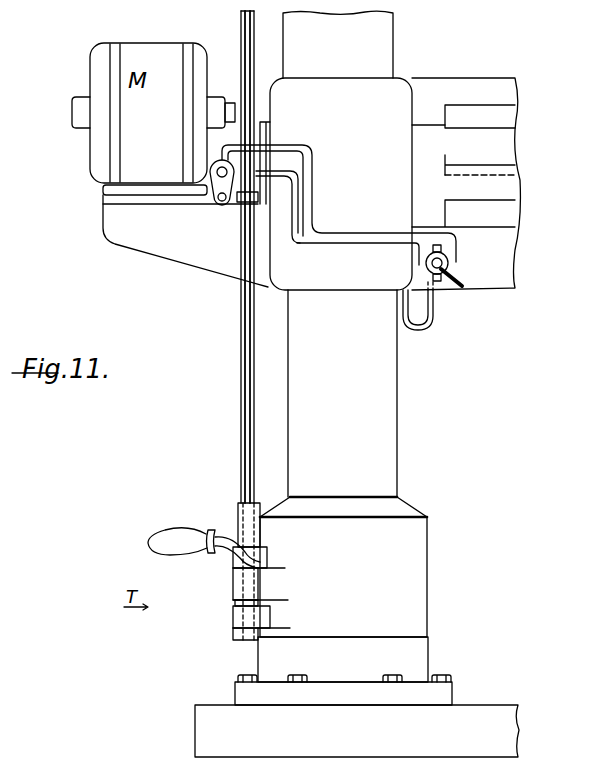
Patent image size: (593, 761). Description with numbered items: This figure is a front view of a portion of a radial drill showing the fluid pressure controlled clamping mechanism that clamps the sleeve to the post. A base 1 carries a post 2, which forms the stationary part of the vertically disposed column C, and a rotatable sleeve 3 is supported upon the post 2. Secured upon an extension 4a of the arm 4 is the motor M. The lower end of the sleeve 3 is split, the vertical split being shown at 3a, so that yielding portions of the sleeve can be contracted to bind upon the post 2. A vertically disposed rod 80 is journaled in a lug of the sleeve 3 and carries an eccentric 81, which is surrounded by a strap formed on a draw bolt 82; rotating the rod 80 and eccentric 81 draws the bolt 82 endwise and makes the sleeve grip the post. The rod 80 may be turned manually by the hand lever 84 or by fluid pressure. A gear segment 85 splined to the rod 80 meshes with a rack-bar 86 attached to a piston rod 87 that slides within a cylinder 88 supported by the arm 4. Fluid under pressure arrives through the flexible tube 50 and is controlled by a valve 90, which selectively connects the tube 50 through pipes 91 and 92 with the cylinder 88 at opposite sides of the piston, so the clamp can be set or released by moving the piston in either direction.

The base 1 is at (484, 705).
The post 2 is at (430, 656).
The sleeve 3 is at (398, 437).
The vertical split of the sleeve 3a is at (233, 581).
The arm 4 is at (521, 148).
The extension of the arm 4a is at (140, 251).
The flexible tube 50 is at (436, 323).
The rod 80 is at (241, 433).
The eccentric 81 is at (235, 603).
The draw bolt 82 is at (233, 620).
The hand lever 84 is at (180, 540).
The gear segment 85 is at (259, 197).
The rack-bar 86 is at (221, 202).
The piston rod 87 is at (216, 173).
The cylinder 88 is at (212, 182).
The valve 90 is at (449, 259).
The pipe 91 is at (313, 157).
The pipe 92 is at (362, 244).
The column C is at (398, 360).